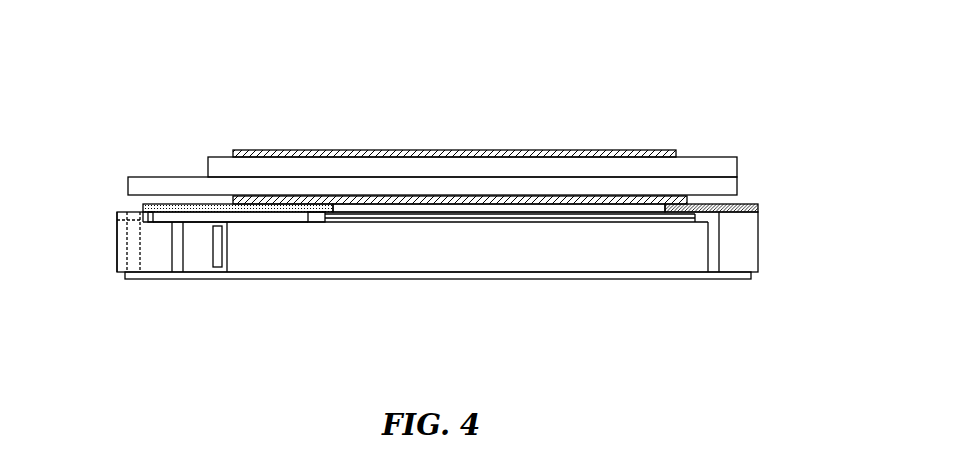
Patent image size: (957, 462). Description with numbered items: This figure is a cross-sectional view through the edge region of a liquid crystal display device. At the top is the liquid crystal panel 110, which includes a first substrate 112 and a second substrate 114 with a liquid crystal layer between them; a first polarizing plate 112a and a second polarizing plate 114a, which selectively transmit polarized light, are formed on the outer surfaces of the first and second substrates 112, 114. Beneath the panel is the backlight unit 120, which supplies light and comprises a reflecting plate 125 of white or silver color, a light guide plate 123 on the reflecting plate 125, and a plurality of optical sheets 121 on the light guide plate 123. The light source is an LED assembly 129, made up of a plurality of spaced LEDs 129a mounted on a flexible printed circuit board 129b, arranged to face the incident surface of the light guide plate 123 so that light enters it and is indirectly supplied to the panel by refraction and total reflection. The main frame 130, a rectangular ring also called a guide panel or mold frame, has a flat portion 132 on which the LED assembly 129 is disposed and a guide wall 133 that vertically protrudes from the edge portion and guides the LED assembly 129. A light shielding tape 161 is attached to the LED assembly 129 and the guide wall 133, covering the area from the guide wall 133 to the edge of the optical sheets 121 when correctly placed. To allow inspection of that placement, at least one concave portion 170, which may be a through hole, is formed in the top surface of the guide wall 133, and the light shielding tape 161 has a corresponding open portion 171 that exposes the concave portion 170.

The liquid crystal panel 110 is at (432, 134).
The first substrate 112 is at (657, 185).
The first polarizing plate 112a is at (550, 193).
The second substrate 114 is at (608, 167).
The second polarizing plate 114a is at (497, 149).
The backlight unit 120 is at (438, 305).
The optical sheets 121 is at (337, 223).
The light guide plate 123 is at (360, 252).
The reflecting plate 125 is at (400, 275).
The LED assembly 129 is at (180, 286).
The LEDs 129a is at (198, 250).
The flexible printed circuit board 129b is at (163, 226).
The main frame 130 is at (422, 239).
The flat portion 132 is at (150, 224).
The guide wall 133 is at (117, 220).
The light shielding tape 161 is at (178, 205).
The concave portion 170 is at (132, 212).
The open portion 171 is at (141, 204).